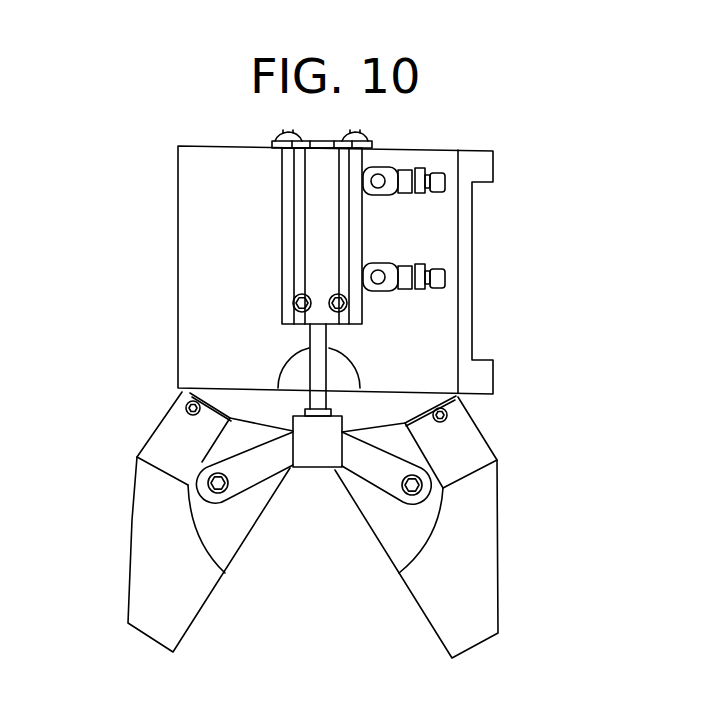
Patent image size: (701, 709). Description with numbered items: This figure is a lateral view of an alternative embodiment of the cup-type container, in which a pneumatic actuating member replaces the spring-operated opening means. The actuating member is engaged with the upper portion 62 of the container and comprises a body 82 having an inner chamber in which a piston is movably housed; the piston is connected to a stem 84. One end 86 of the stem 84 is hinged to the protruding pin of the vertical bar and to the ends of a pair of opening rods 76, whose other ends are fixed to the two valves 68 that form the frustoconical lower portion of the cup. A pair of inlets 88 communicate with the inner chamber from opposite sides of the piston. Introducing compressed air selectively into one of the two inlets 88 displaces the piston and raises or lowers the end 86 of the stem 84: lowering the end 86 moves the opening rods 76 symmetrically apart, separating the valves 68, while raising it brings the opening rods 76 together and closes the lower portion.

The upper portion 62 is at (185, 193).
The body 82 is at (287, 278).
The stem 84 is at (317, 373).
The end of the stem 86 is at (310, 458).
The opening rods 76 is at (235, 478).
The valves 68 is at (143, 524).
The inlets 88 is at (437, 193).